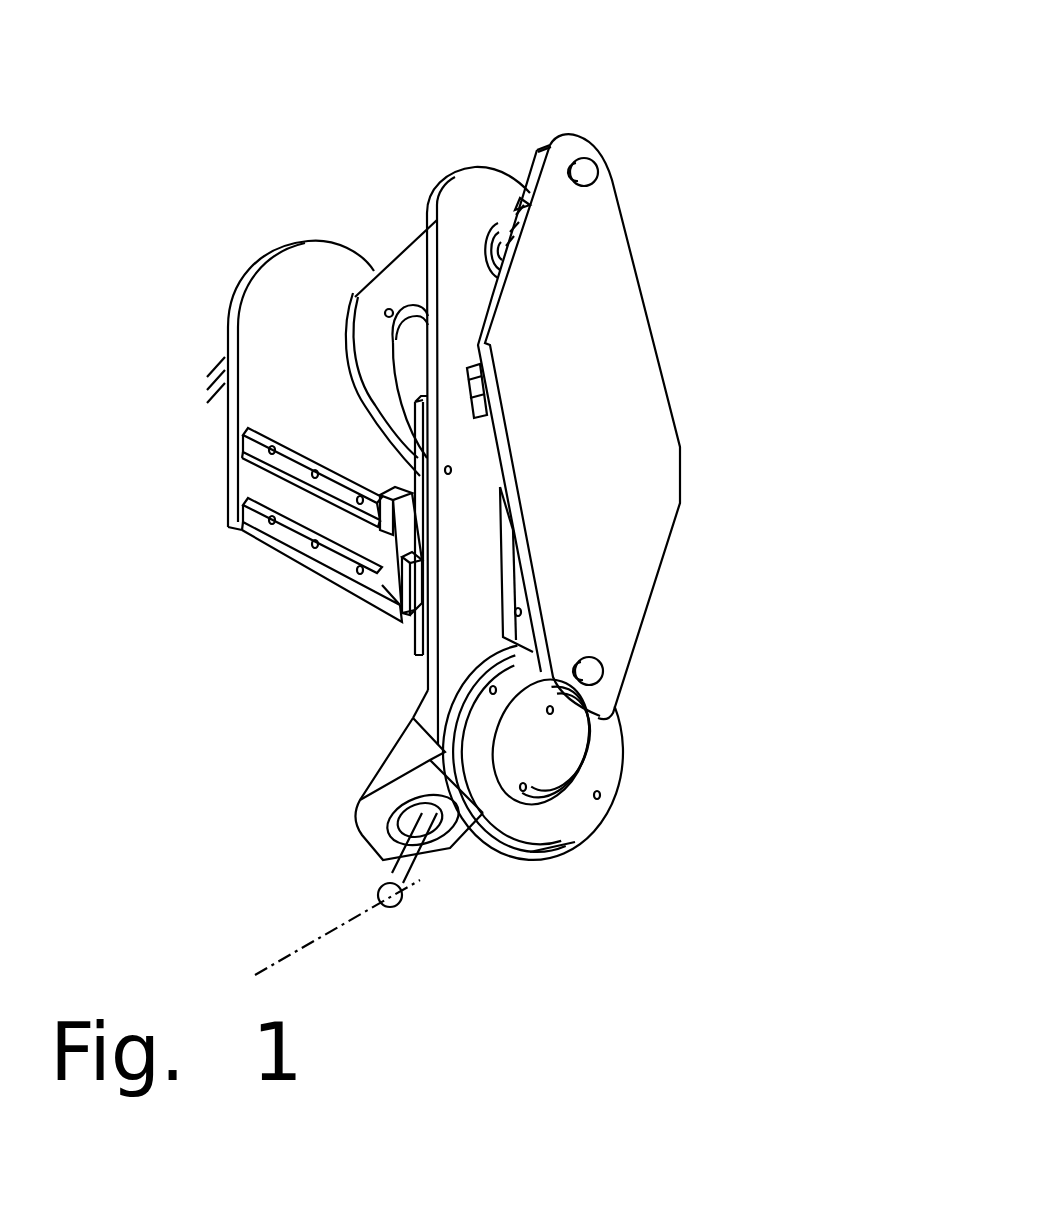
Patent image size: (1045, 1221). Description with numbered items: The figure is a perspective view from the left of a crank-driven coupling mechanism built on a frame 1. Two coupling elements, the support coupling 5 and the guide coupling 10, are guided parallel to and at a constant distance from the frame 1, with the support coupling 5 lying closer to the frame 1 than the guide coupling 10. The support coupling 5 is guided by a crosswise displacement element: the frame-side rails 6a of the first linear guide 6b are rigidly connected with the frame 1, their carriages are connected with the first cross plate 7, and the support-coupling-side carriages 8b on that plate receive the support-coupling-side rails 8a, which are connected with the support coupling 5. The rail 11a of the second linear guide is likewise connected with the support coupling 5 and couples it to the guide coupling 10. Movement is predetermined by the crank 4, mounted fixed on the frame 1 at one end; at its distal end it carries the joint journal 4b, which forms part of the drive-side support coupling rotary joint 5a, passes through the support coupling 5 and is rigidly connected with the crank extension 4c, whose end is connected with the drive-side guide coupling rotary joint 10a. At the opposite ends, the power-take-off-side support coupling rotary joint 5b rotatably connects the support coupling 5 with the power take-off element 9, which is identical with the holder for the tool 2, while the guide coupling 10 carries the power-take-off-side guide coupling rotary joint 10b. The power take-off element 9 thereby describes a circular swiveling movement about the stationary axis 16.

The frame 1 is at (315, 267).
The tool 2 is at (412, 752).
The crank 4 is at (363, 315).
The joint journal 4b is at (487, 233).
The crank extension 4c is at (519, 207).
The support coupling 5 is at (455, 347).
The support coupling rotary joint on the drive side 5a is at (497, 228).
The support coupling rotary joint on the power take-off side 5b is at (557, 740).
The rail on the frame side 6a is at (247, 438).
The first linear guide 6b is at (403, 527).
The first cross plate 7 is at (405, 553).
The rail on the support coupling side 8a is at (420, 502).
The carriage on the support coupling side 8b is at (410, 600).
The power take-off element 9 is at (372, 820).
The guide coupling 10 is at (603, 317).
The guide coupling rotary joint on the drive side 10a is at (586, 172).
The guide coupling rotary joint on the power take-off side 10b is at (600, 662).
The rail of the 2nd linear guide on the support coupling side 11a is at (507, 593).
The stationary axis 16 is at (293, 950).